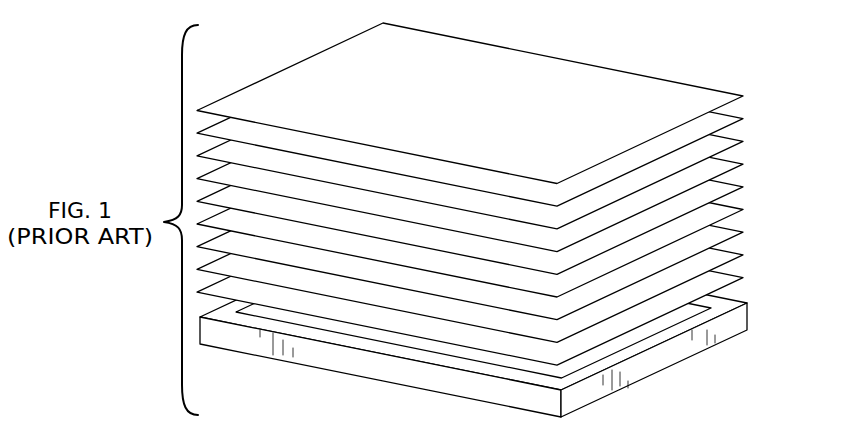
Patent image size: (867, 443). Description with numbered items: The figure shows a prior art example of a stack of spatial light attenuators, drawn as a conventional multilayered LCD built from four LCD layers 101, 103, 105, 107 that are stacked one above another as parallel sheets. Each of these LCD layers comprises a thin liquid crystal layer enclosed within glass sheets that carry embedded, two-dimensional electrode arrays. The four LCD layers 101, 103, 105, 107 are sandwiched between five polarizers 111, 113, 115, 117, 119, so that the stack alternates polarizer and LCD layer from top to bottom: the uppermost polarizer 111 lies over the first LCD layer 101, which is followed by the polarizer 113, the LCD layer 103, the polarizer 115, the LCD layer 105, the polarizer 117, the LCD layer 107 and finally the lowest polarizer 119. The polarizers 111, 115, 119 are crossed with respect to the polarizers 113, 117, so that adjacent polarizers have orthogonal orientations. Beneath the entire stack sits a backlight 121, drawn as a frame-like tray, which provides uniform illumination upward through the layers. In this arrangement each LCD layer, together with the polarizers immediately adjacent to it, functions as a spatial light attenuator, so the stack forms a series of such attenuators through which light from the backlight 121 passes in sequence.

The polarizer 111 is at (733, 94).
The LCD layer 101 is at (733, 117).
The polarizer 113 is at (733, 139).
The LCD layer 103 is at (733, 162).
The polarizer 115 is at (733, 185).
The LCD layer 105 is at (733, 208).
The polarizer 117 is at (733, 230).
The LCD layer 107 is at (733, 253).
The polarizer 119 is at (733, 276).
The backlight 121 is at (740, 318).